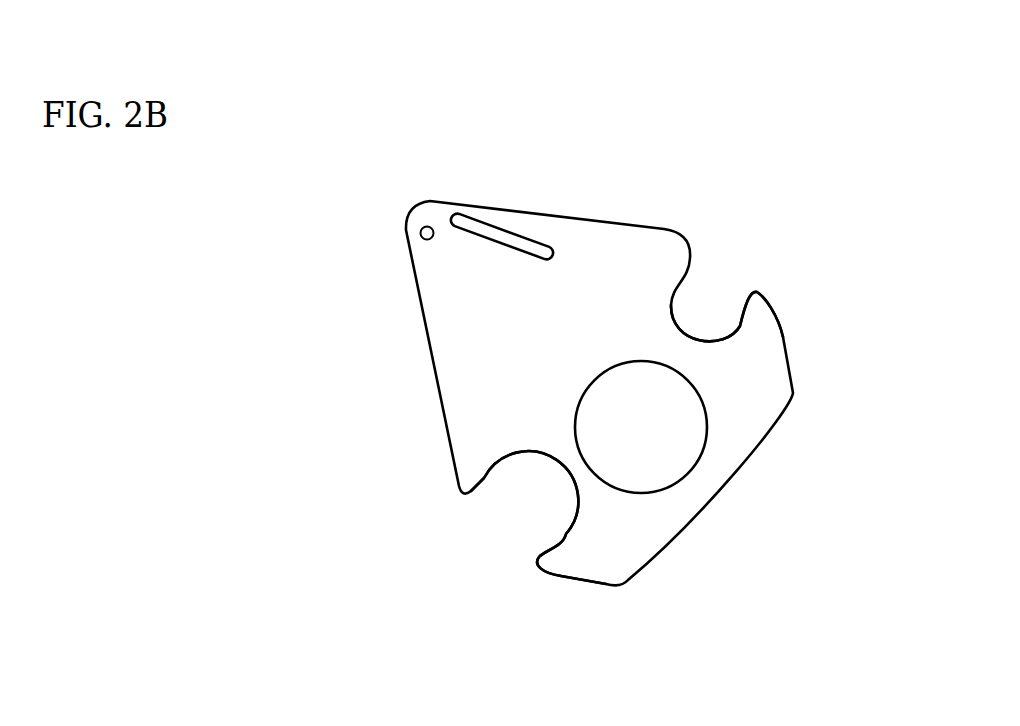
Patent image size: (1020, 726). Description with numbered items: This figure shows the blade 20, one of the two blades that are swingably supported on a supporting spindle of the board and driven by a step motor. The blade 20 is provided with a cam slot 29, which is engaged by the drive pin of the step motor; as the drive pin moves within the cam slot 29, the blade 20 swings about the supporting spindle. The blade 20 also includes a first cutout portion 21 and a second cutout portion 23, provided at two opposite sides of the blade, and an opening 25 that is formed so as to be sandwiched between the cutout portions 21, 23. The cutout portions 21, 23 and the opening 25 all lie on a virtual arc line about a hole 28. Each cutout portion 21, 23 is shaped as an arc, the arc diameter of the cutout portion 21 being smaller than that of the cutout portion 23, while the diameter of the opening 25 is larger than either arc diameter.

The blade 20 is at (432, 373).
The cutout portion 21 is at (733, 327).
The cutout portion 23 is at (548, 534).
The opening 25 is at (633, 445).
The hole 28 is at (421, 229).
The cam slot 29 is at (545, 250).